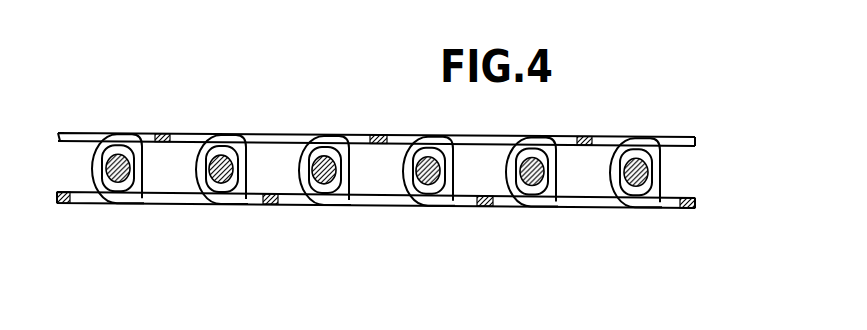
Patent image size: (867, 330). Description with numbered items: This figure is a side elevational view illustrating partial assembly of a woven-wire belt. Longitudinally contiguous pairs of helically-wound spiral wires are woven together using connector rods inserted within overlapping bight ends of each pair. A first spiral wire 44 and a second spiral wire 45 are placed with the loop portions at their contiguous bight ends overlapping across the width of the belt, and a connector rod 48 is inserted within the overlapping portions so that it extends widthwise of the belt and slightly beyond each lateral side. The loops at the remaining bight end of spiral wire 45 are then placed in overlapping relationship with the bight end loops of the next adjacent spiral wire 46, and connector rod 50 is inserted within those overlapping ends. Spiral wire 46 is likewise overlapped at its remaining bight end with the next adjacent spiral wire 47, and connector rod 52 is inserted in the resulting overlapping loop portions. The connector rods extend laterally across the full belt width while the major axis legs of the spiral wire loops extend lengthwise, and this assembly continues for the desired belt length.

The spiral wire 44 is at (168, 129).
The spiral wire 45 is at (266, 210).
The spiral wire 46 is at (375, 129).
The spiral wire 47 is at (483, 212).
The connector rod 48 is at (224, 188).
The connector rod 50 is at (325, 190).
The connector rod 52 is at (436, 190).